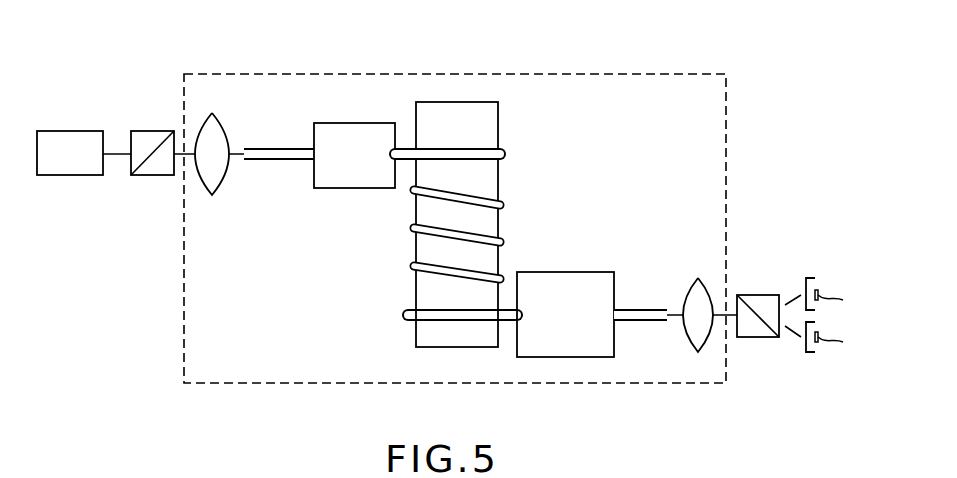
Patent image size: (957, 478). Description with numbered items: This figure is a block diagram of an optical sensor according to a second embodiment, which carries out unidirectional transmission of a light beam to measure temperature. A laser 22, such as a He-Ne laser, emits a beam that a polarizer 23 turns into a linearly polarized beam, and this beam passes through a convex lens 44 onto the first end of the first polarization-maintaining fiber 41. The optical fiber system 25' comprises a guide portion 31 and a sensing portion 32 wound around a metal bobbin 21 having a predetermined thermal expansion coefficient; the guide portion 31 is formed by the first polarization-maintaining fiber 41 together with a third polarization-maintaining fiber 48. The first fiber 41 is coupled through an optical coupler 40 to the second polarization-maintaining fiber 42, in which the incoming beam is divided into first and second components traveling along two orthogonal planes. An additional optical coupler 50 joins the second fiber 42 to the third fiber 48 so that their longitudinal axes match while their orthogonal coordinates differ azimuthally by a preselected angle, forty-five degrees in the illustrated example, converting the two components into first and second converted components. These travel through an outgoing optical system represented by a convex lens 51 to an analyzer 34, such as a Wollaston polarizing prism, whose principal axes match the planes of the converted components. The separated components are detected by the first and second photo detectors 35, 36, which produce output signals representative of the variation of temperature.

The bobbin 21 is at (498, 123).
The laser 22 is at (72, 131).
The polarizer 23 is at (150, 131).
The optical fiber system 25' is at (455, 203).
The guide portion 31 is at (279, 147).
The sensing portion 32 is at (457, 141).
The analyzer 34 is at (757, 295).
The first photo detector 35 is at (807, 278).
The second photo detector 36 is at (807, 352).
The optical coupler 40 is at (355, 123).
The first polarization-maintaining fiber 41 is at (279, 161).
The second polarization-maintaining fiber 42 is at (502, 156).
The convex lens 44 is at (221, 128).
The third polarization-maintaining fiber 48 is at (640, 308).
The additional optical coupler 50 is at (568, 272).
The convex lens 51 is at (693, 279).